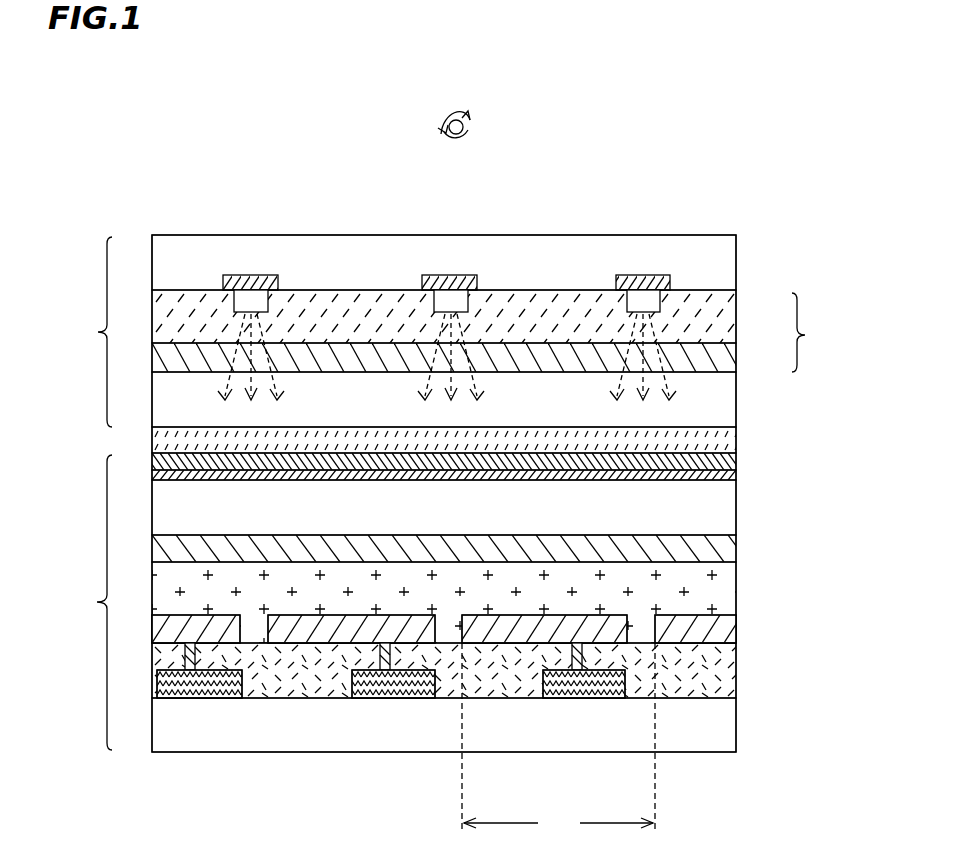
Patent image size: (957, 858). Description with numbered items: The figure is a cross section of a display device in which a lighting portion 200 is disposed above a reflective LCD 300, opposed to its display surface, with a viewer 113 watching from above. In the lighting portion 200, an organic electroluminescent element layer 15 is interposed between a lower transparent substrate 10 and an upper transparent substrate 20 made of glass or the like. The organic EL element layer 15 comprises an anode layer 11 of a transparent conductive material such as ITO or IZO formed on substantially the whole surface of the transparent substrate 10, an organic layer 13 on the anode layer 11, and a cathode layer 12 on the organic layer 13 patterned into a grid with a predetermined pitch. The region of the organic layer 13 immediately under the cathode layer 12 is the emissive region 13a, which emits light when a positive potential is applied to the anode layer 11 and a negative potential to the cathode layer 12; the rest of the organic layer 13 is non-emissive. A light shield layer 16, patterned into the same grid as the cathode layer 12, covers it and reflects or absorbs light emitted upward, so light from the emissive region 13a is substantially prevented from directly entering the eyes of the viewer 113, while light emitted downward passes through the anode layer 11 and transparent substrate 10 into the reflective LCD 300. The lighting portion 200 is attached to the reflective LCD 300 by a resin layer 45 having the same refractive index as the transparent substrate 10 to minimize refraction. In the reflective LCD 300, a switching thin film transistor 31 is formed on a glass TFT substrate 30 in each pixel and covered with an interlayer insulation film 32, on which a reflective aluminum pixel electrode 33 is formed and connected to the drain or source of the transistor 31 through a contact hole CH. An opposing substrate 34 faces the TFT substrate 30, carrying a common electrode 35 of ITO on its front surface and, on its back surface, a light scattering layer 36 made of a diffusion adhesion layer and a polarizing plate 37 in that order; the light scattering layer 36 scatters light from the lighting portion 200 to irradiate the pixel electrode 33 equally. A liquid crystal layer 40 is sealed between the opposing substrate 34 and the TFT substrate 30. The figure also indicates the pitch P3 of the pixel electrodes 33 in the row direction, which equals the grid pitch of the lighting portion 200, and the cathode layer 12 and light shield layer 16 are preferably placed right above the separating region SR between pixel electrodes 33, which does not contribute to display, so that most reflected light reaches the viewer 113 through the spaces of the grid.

The viewer 113 is at (483, 125).
The lighting portion 200 is at (89, 247).
The reflective LCD 300 is at (89, 471).
The transparent substrate 20 is at (728, 264).
The light shield layer 16 is at (238, 275).
The cathode layer 12 is at (261, 275).
The organic layer 13 is at (728, 334).
The emissive region 13a is at (240, 333).
The anode layer 11 is at (728, 359).
The organic electroluminescent element layer 15 is at (815, 332).
The transparent substrate 10 is at (728, 404).
The resin layer 45 is at (728, 438).
The polarizing plate 37 is at (728, 463).
The light scattering layer 36 is at (728, 480).
The opposing substrate 34 is at (728, 514).
The common electrode 35 is at (728, 551).
The liquid crystal layer 40 is at (728, 588).
The pixel electrode 33 is at (728, 631).
The interlayer insulation film 32 is at (728, 669).
The switching thin film transistor 31 is at (185, 697).
The TFT substrate 30 is at (728, 724).
The contact hole CH is at (188, 645).
The separating region SR is at (257, 632).
The pitch P3 is at (558, 739).